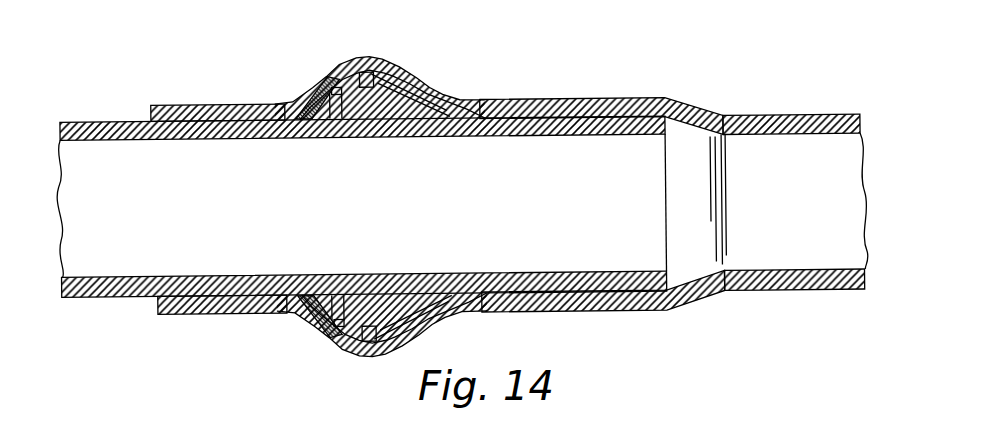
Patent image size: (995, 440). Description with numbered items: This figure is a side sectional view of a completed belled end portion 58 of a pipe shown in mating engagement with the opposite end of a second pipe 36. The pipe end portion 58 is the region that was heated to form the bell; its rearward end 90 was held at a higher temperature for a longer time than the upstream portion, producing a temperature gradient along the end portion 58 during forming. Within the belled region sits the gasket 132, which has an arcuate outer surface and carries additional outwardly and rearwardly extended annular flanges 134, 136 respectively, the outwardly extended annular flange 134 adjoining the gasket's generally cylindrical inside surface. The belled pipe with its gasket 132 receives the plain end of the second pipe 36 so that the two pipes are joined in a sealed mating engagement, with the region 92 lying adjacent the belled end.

The tube 36 is at (843, 115).
The rearward end 90 is at (152, 108).
The tube portion 92 is at (102, 0).
The pipe end portion 58 is at (333, 60).
The gasket 132 is at (392, 86).
The outwardly extended annular flange 134 is at (369, 76).
The rearwardly extended annular flange 136 is at (327, 88).